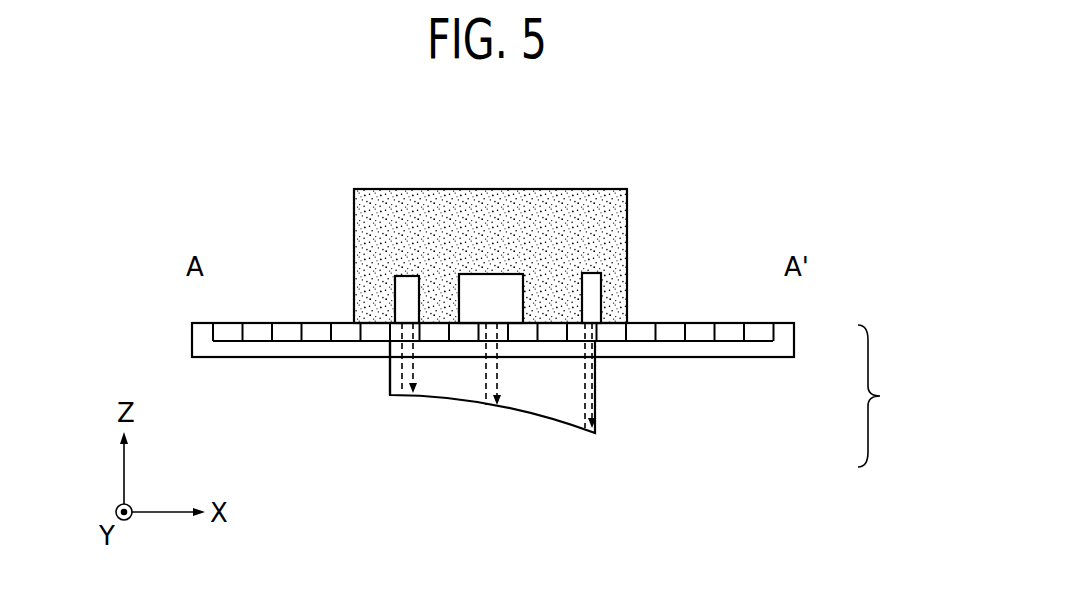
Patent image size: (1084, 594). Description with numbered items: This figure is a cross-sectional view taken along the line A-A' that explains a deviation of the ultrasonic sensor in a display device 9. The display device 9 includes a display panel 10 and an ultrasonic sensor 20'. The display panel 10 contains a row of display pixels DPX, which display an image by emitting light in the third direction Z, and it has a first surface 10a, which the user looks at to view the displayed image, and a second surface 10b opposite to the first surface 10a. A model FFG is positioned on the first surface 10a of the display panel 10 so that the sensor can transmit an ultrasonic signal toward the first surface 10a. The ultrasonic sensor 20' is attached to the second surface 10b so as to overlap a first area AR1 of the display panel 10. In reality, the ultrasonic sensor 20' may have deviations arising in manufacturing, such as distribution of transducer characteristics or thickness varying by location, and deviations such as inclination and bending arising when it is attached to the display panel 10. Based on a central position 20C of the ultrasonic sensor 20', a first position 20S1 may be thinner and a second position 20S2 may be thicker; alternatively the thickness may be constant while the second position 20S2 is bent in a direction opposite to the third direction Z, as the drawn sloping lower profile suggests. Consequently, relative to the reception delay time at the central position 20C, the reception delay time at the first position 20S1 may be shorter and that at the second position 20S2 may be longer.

The model FFG is at (572, 190).
The display panel 10 is at (797, 340).
The first surface 10a is at (653, 323).
The second surface 10b is at (675, 358).
The display pixels DPX is at (213, 332).
The ultrasonic sensor 20' is at (625, 404).
The first area AR1 is at (397, 350).
The first position 20S1 is at (405, 396).
The central position 20C is at (490, 408).
The second position 20S2 is at (587, 432).
The display device 9 is at (878, 396).